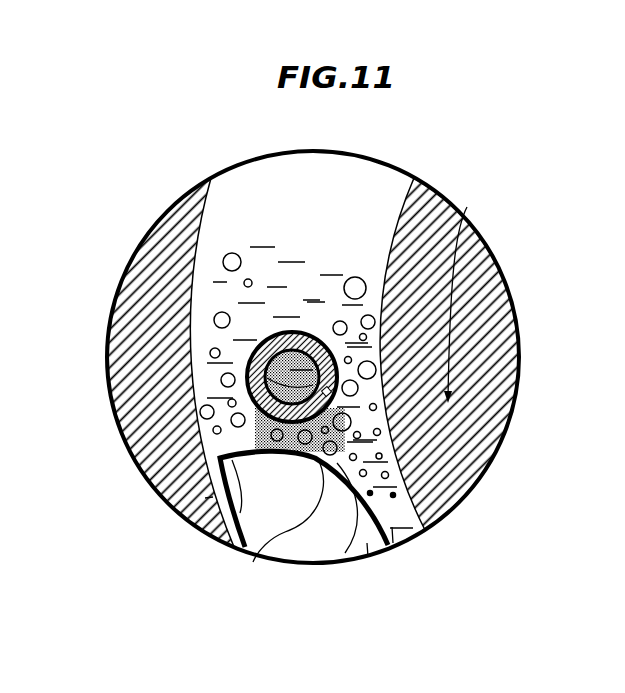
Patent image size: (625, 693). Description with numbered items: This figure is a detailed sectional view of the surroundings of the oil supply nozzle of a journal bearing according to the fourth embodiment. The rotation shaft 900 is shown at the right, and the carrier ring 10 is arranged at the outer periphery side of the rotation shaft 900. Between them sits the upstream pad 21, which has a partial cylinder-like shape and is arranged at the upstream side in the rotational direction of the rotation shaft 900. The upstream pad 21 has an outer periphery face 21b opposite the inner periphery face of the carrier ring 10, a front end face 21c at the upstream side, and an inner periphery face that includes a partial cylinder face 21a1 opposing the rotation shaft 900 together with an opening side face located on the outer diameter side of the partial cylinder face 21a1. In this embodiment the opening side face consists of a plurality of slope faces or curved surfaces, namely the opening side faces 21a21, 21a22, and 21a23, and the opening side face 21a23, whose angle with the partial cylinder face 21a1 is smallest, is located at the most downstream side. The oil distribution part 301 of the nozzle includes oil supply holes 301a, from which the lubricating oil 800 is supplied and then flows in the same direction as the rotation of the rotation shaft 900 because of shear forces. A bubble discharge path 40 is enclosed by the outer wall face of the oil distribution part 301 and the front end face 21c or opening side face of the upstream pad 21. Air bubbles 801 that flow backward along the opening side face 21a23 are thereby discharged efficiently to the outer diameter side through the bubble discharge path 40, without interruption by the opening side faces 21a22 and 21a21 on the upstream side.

The carrier ring 10 is at (165, 240).
The upstream pad 21 is at (368, 545).
The partial cylinder face 21a1 is at (403, 540).
The opening side face 21a21 is at (224, 535).
The opening side face 21a22 is at (290, 456).
The opening side face 21a23 is at (345, 553).
The outer periphery face 21b is at (191, 523).
The front end face 21c is at (213, 497).
The bubble discharge path 40 is at (262, 447).
The oil distribution part 301 is at (247, 384).
The oil supply hole 301a is at (247, 370).
The lubricating oil 800 is at (257, 245).
The air bubbles 801 is at (225, 256).
The rotation shaft 900 is at (467, 207).